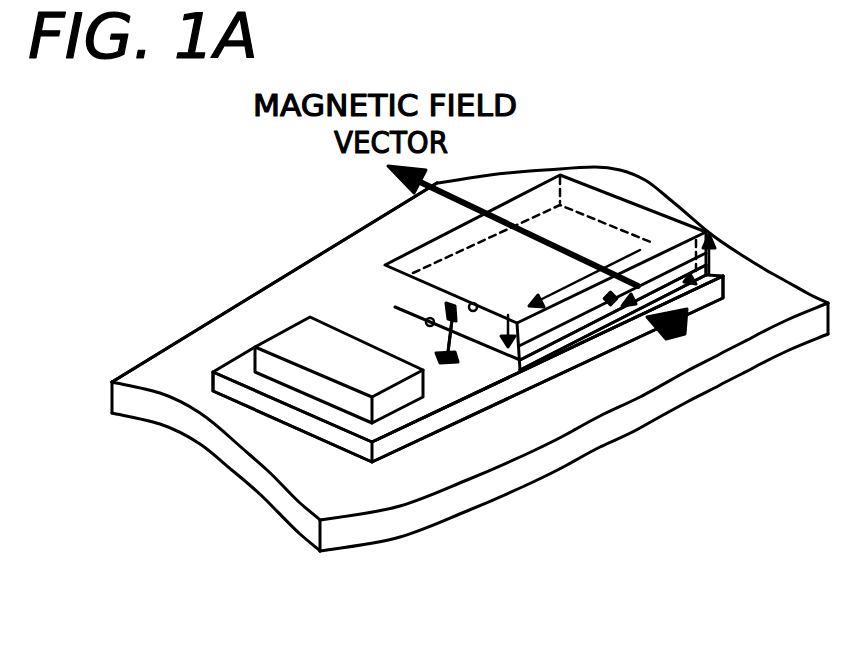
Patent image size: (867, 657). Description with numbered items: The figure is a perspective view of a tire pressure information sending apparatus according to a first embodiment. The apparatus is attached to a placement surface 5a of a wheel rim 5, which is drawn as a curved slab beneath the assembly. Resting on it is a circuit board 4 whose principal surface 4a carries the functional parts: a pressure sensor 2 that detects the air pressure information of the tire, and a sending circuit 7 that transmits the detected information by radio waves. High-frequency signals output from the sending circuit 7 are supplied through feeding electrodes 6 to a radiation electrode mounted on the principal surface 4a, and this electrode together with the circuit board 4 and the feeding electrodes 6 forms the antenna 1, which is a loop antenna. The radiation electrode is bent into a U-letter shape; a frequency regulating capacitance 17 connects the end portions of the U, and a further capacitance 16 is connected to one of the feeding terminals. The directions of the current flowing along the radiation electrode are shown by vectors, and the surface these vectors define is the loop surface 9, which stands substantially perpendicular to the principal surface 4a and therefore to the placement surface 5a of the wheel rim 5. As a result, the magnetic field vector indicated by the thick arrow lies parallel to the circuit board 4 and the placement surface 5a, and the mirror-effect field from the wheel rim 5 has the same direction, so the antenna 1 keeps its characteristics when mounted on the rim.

The antenna 1 is at (622, 220).
The pressure sensor 2 is at (387, 400).
The circuit board 4 is at (550, 373).
The principal surface 4a is at (500, 380).
The wheel rim 5 is at (252, 468).
The placement surface 5a is at (213, 347).
The feeding electrodes 6 is at (430, 322).
The sending circuit 7 is at (468, 543).
The loop surface 9 is at (668, 336).
The capacitance 16 is at (450, 360).
The frequency regulating capacitance 17 is at (446, 303).